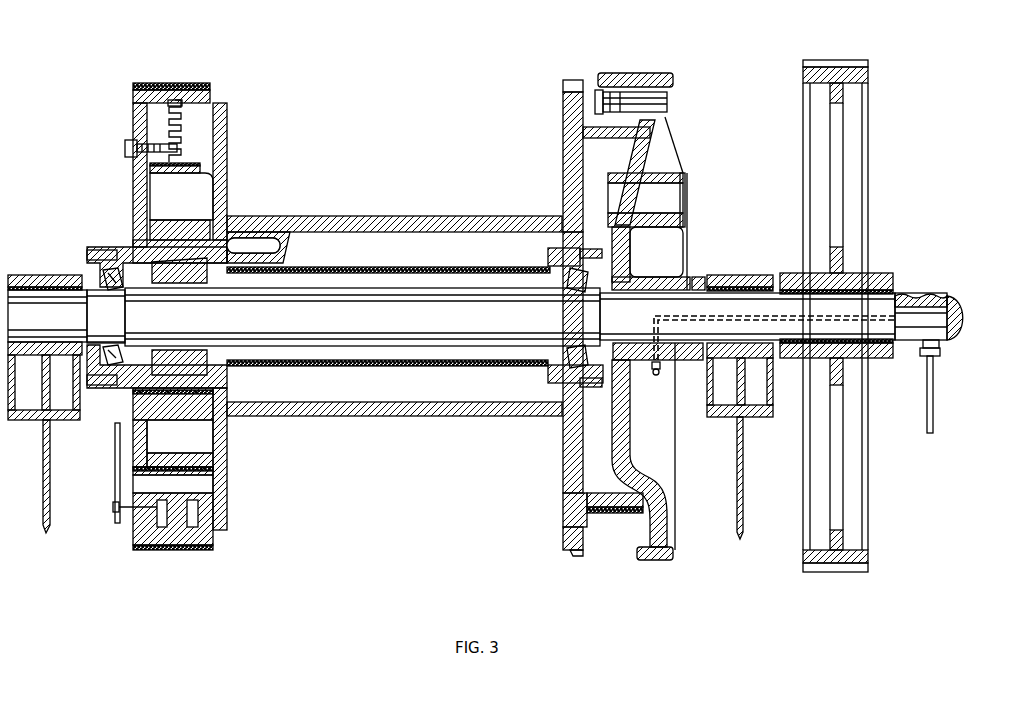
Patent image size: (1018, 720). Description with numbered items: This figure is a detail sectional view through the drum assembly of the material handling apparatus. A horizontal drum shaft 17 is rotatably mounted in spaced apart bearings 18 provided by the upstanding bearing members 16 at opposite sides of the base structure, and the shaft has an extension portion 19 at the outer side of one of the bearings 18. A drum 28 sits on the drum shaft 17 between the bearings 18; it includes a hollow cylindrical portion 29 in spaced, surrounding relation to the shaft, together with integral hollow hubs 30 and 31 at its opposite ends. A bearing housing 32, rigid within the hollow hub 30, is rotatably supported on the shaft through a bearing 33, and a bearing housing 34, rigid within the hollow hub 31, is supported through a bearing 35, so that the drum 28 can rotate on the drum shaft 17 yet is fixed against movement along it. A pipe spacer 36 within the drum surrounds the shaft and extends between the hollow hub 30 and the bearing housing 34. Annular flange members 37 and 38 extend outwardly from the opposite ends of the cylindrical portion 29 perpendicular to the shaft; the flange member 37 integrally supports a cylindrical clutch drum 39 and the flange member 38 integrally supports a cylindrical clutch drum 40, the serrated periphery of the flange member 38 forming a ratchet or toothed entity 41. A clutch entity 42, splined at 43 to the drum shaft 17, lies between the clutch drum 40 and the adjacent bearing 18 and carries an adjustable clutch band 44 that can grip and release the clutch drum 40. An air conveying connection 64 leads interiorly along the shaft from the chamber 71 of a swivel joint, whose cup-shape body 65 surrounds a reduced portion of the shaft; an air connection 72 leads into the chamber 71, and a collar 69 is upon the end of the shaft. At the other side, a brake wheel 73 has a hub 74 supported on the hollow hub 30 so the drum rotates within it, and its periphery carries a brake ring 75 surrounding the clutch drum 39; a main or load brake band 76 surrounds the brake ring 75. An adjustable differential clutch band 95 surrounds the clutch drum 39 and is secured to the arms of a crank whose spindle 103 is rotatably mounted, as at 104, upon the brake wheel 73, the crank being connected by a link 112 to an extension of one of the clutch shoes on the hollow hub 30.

The bearing member 16 is at (53, 517).
The drum shaft 17 is at (437, 330).
The bearing 18 is at (18, 278).
The extension portion 19 is at (862, 307).
The drum 28 is at (562, 425).
The hollow cylindrical portion 29 is at (397, 418).
The hollow hub 30 is at (172, 378).
The hollow hub 31 is at (550, 257).
The bearing housing 32 is at (135, 274).
The bearing 33 is at (113, 293).
The bearing housing 34 is at (547, 368).
The bearing 35 is at (567, 293).
The pipe spacer 36 is at (407, 270).
The annular flange member 37 is at (178, 156).
The annular flange member 38 is at (562, 155).
The cylindrical clutch drum 39 is at (170, 177).
The cylindrical clutch drum 40 is at (607, 139).
The ratchet or toothed entity 41 is at (563, 541).
The clutch entity 42 is at (657, 507).
The spline 43 is at (697, 262).
The adjustable clutch band 44 is at (613, 513).
The air conveying connection 64 is at (658, 368).
The cup-shape body 65 is at (917, 293).
The collar 69 is at (952, 342).
The chamber 71 is at (965, 316).
The air connection 72 is at (925, 417).
The brake wheel 73 is at (133, 188).
The hub 74 is at (188, 230).
The brake ring 75 is at (153, 84).
The main or load brake band 76 is at (181, 83).
The differential clutch band 95 is at (193, 165).
The spindle 103 is at (193, 488).
The mounting 104 is at (203, 482).
The link 112 is at (115, 460).